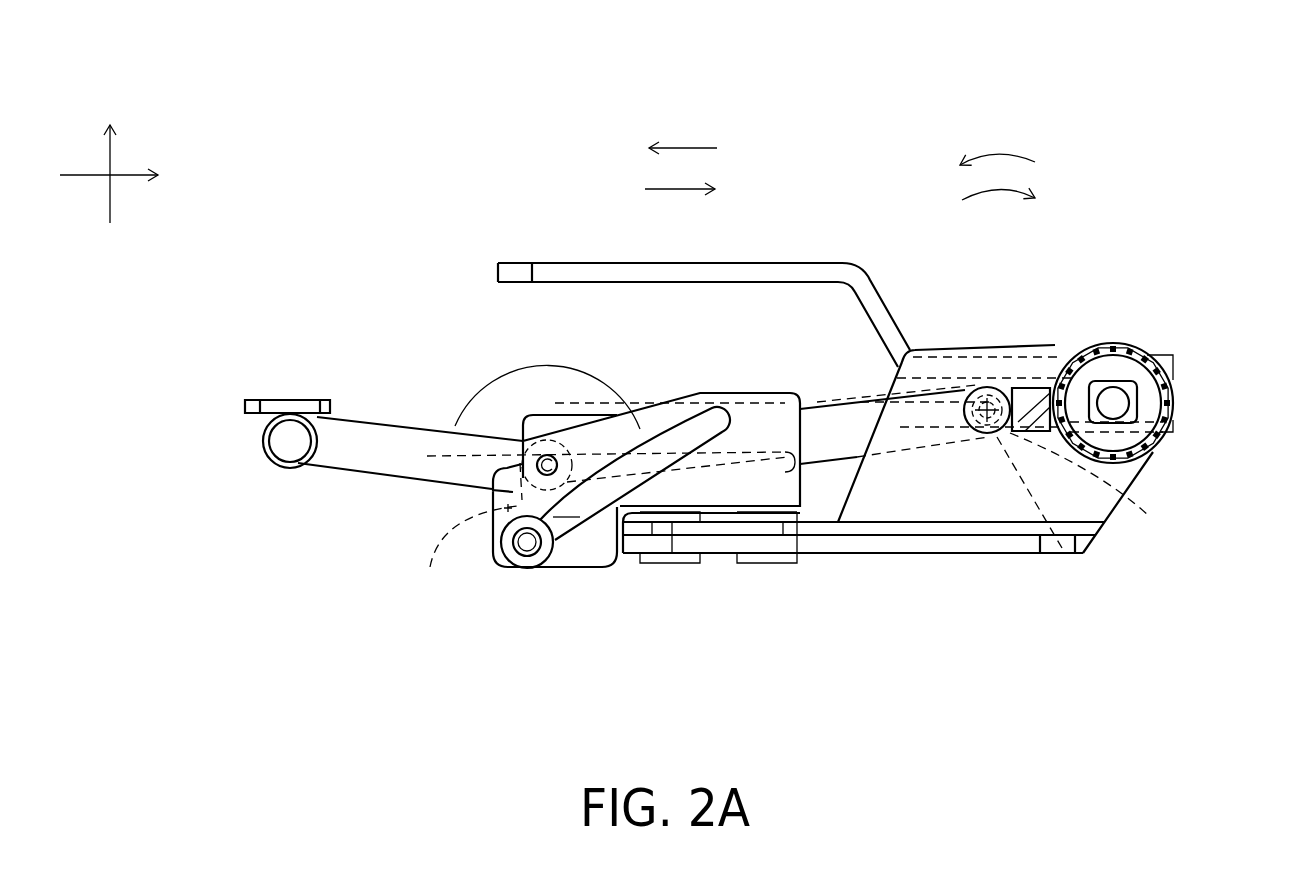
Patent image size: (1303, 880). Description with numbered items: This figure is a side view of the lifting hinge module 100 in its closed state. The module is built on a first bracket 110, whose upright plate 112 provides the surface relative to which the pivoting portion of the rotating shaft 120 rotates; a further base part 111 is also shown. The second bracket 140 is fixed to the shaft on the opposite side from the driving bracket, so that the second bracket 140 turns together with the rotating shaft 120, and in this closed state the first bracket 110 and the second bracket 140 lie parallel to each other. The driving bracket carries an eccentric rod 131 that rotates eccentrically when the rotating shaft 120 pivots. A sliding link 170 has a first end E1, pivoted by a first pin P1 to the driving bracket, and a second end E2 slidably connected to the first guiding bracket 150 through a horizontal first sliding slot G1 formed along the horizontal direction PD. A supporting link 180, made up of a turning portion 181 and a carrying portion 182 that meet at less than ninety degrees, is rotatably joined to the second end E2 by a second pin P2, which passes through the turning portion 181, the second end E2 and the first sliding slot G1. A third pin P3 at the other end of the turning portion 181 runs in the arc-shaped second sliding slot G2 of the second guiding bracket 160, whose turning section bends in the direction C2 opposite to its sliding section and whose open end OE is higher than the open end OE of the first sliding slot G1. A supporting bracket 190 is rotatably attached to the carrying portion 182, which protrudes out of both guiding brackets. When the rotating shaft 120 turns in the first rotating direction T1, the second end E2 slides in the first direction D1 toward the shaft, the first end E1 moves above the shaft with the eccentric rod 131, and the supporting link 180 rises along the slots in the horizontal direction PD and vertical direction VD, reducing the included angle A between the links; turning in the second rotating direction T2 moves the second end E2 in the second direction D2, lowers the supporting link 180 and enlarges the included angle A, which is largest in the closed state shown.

The lifting hinge module 100 is at (1277, 741).
The first bracket 110 is at (855, 630).
The bottom plate of base 111 is at (872, 550).
The upright plate 112 is at (948, 497).
The rotating shaft 120 is at (1113, 402).
The eccentric rod 131 is at (1160, 517).
The second bracket 140 is at (768, 268).
The first guiding bracket 150 is at (580, 427).
The second guiding bracket 160 is at (587, 563).
The sliding link 170 is at (828, 432).
The supporting link 180 is at (345, 606).
The turning portion 181 is at (432, 564).
The carrying portion 182 is at (378, 467).
The supporting bracket 190 is at (271, 404).
The first pin P1 is at (1062, 548).
The second pin P2 is at (430, 452).
The third pin P3 is at (527, 553).
The first end E1 is at (972, 385).
The second end E2 is at (543, 438).
The first sliding slot G1 is at (712, 448).
The second sliding slot G2 is at (600, 492).
The open end OE is at (781, 448).
The bending direction of the turning section C2 is at (652, 465).
The included angle A is at (547, 381).
The first direction D1 is at (680, 174).
The second direction D2 is at (683, 134).
The first rotating direction T1 is at (998, 179).
The second rotating direction T2 is at (997, 142).
The vertical direction VD is at (111, 157).
The horizontal direction PD is at (125, 174).